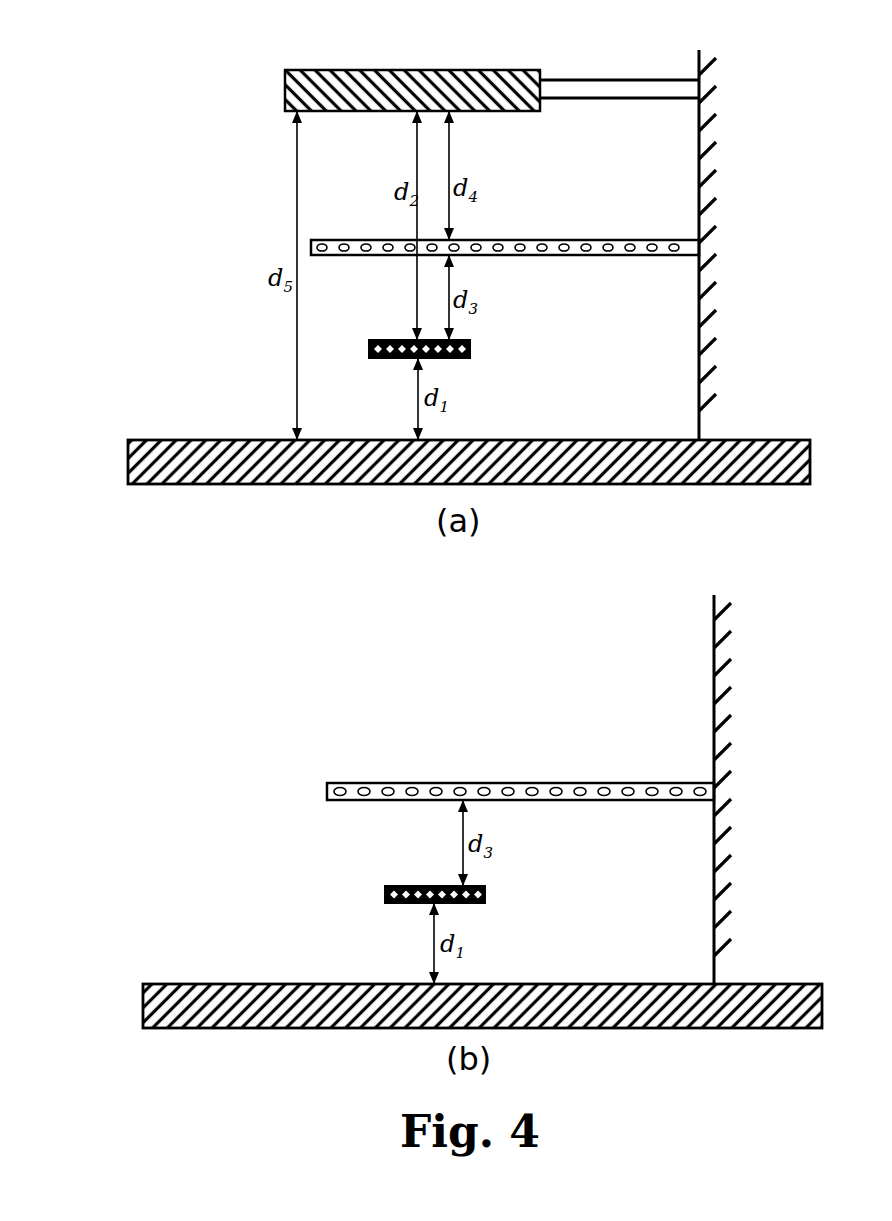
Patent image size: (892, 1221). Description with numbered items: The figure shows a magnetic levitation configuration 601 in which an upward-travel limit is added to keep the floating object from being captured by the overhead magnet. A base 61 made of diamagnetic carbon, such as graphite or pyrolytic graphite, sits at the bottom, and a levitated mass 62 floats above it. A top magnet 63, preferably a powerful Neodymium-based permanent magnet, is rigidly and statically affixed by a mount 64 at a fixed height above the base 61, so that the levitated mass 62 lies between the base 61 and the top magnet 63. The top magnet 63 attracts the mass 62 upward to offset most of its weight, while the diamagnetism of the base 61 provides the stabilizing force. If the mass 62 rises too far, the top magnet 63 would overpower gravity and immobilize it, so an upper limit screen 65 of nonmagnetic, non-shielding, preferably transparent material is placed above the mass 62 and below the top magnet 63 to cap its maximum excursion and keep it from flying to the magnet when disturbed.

The configuration 601 is at (162, 148).
The base 61 is at (128, 462).
The levitated mass 62 is at (470, 345).
The top magnet 63 is at (285, 88).
The rigid mount 64 is at (718, 72).
The upper limit screen 65 is at (603, 240).